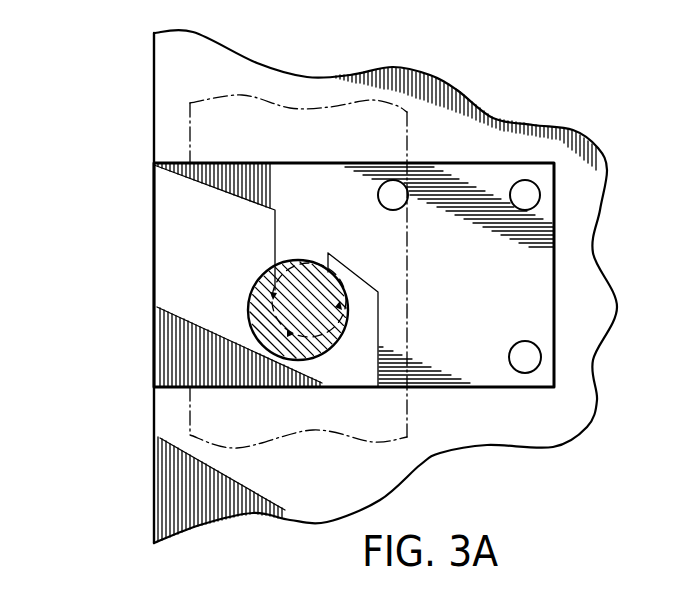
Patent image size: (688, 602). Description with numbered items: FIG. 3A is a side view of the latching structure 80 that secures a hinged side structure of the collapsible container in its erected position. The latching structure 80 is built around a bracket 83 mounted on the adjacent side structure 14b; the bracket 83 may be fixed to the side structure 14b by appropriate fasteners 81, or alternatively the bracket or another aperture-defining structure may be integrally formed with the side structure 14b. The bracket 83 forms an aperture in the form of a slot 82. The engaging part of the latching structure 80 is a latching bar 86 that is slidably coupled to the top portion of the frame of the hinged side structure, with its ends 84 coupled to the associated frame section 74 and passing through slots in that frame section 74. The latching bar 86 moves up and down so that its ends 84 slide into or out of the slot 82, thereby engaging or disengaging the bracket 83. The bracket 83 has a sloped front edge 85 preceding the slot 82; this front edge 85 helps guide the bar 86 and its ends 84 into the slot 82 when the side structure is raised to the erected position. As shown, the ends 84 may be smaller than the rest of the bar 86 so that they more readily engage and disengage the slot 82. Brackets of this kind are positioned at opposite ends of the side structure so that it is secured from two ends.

The side structure 14b is at (150, 108).
The frame section 74 is at (242, 95).
The latching structure 80 is at (140, 237).
The fasteners 81 is at (396, 210).
The slot 82 is at (301, 244).
The bracket 83 is at (180, 283).
The ends 84 is at (338, 278).
The sloped front edge 85 is at (337, 272).
The latching bar 86 is at (348, 312).